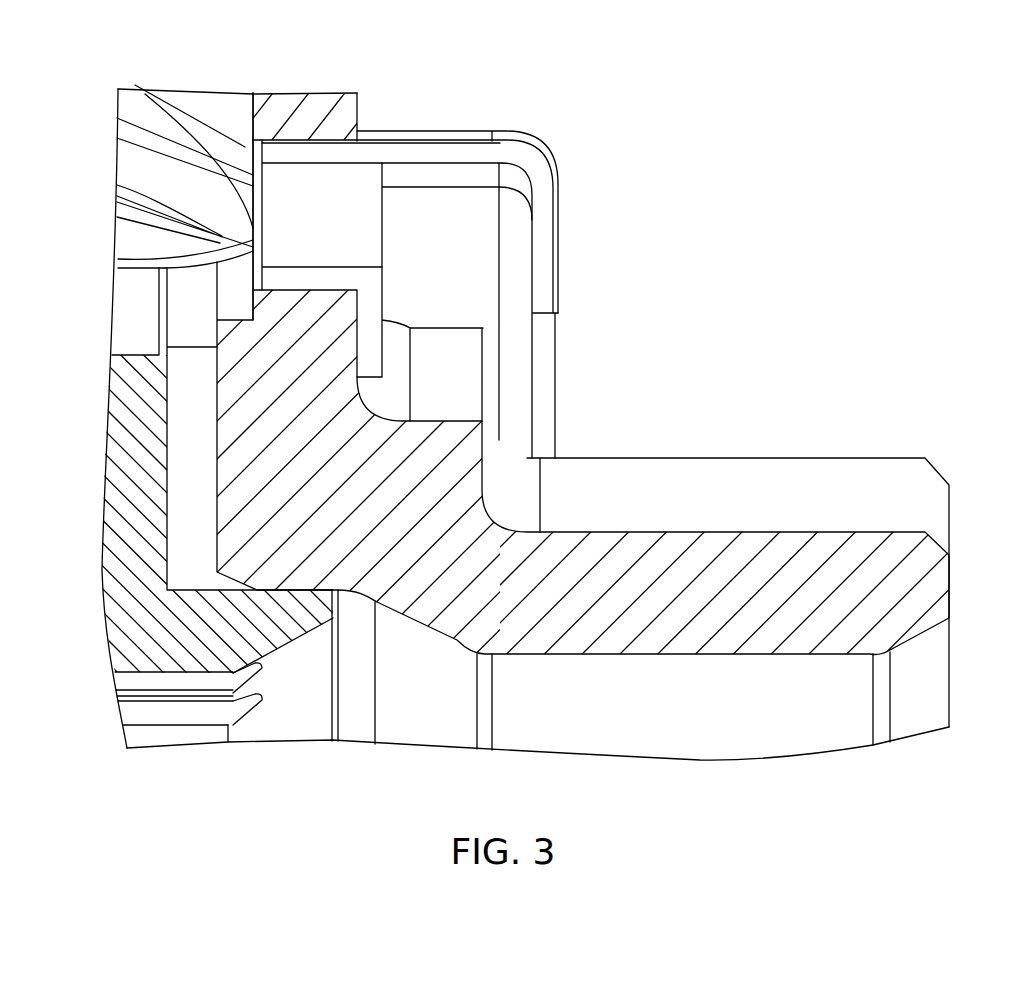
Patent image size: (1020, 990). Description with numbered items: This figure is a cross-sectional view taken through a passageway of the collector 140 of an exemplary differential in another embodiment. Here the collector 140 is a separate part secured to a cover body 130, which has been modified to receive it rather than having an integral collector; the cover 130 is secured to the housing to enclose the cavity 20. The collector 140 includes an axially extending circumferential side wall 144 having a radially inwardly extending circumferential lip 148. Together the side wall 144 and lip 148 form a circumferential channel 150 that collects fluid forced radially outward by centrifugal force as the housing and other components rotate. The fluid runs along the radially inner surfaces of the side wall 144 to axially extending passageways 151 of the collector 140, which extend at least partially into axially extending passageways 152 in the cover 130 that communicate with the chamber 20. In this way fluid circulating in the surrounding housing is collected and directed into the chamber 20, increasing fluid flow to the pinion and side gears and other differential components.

The cavity 20 is at (225, 263).
The cover body 130 is at (767, 490).
The collector 140 is at (517, 125).
The circumferential side wall 144 is at (440, 137).
The circumferential lip 148 is at (573, 182).
The circumferential channel 150 is at (472, 212).
The axially extending passageway 151 is at (318, 203).
The axially extending passageway 152 is at (135, 85).